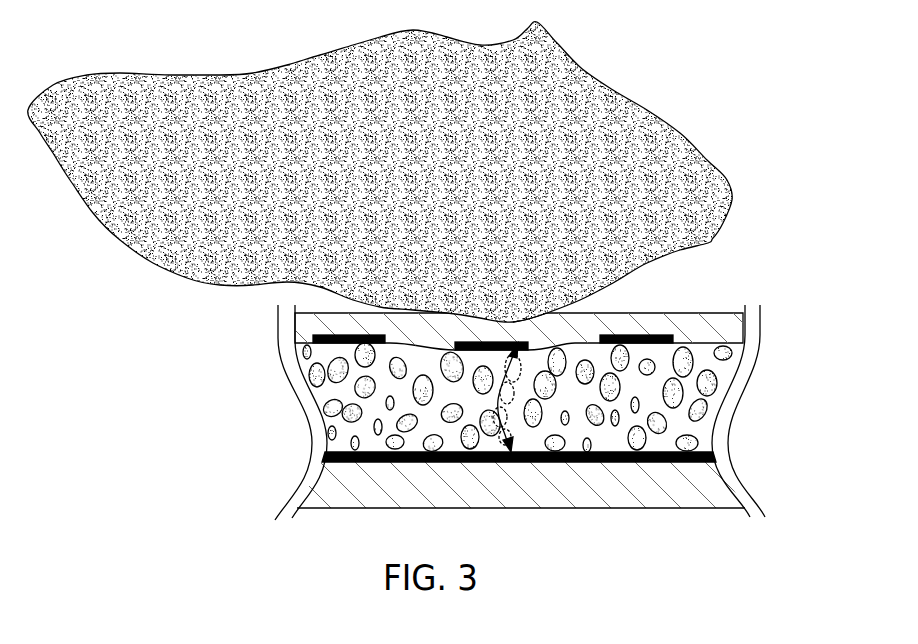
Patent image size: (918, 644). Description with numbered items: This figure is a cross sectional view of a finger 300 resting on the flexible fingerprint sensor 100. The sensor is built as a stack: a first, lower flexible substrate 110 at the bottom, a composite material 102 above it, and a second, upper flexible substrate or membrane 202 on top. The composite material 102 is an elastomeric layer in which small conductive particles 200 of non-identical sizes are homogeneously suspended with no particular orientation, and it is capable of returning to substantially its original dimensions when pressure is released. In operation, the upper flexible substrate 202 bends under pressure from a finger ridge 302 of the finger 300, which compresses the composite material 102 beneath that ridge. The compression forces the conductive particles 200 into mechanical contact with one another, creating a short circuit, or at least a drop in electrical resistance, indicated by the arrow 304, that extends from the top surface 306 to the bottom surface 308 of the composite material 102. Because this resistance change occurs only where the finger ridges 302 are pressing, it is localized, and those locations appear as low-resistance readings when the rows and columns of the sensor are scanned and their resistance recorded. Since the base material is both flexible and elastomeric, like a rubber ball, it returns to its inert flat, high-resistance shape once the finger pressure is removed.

The flexible fingerprint sensor 100 is at (270, 432).
The composite material 102 is at (703, 427).
The first (lower) flexible substrate 110 is at (323, 490).
The conductive particles 200 is at (715, 380).
The second (upper) flexible substrate 202 is at (312, 326).
The finger 300 is at (577, 78).
The finger ridge 302 is at (543, 302).
The arrow denoting short circuit 304 is at (500, 392).
The top surface 306 is at (716, 361).
The bottom surface 308 is at (713, 444).